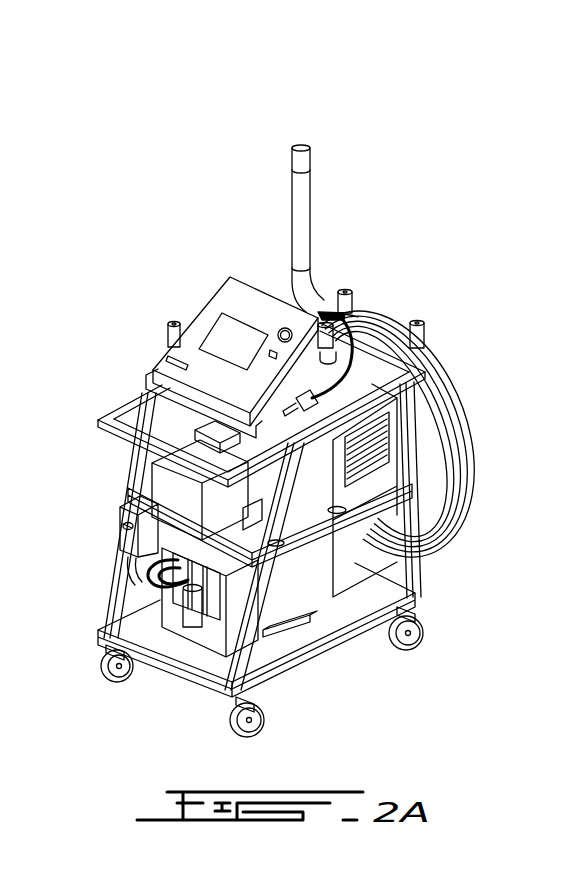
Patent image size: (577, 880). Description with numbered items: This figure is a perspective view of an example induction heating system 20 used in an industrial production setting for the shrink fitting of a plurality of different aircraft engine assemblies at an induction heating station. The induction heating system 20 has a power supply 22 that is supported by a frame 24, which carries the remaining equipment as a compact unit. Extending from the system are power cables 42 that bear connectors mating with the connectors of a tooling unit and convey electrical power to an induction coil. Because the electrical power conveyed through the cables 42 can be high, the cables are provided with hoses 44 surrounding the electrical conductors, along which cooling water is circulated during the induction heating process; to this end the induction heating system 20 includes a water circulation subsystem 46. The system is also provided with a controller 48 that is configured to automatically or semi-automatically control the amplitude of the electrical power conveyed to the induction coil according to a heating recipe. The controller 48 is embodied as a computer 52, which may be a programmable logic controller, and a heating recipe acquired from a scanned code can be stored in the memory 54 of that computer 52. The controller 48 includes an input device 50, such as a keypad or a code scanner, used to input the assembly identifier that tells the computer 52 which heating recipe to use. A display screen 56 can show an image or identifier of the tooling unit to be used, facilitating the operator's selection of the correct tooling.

The induction heating system 20 is at (376, 162).
The power supply 22 is at (315, 486).
The frame 24 is at (130, 475).
The power cables 42 is at (457, 427).
The hoses 44 is at (446, 378).
The water circulation subsystem 46 is at (270, 609).
The controller 48 is at (225, 312).
The input device 50 is at (356, 333).
The computer 52 is at (239, 307).
The memory 54 is at (200, 325).
The display screen 56 is at (221, 344).